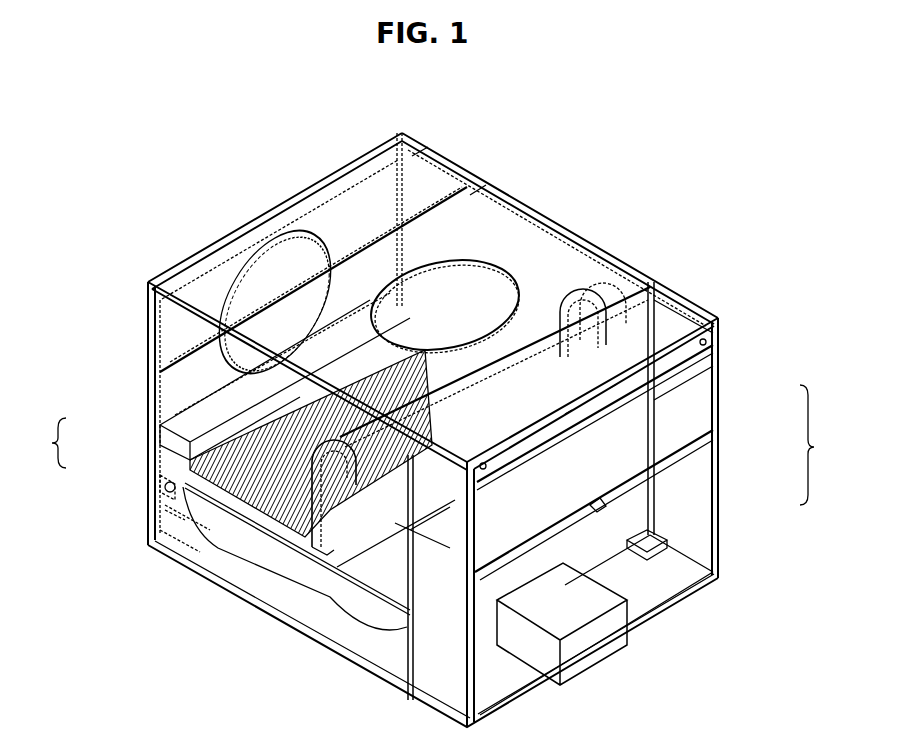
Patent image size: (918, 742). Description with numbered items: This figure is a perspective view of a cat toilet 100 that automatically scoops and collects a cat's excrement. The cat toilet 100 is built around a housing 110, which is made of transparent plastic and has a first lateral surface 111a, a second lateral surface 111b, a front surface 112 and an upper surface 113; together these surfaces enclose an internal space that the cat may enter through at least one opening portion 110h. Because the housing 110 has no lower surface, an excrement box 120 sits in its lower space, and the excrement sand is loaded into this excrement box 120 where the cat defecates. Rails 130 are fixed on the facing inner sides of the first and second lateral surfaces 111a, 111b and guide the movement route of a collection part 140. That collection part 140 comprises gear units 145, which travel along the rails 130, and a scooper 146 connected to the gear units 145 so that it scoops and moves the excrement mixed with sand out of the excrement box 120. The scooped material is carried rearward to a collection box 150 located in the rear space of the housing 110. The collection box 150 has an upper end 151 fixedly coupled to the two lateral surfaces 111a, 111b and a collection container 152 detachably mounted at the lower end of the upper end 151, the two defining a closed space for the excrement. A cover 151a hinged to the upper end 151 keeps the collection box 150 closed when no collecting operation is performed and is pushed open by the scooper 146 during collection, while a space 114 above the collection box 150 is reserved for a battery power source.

The cat toilet 100 is at (96, 110).
The housing 110 is at (480, 222).
The opening portion 110h is at (292, 268).
The first lateral surface 111a is at (448, 160).
The second lateral surface 111b is at (152, 283).
The front surface 112 is at (245, 228).
The upper surface 113 is at (578, 270).
The space 114 is at (682, 316).
The excrement box 120 is at (325, 593).
The rails 130 is at (260, 528).
The collection part 140 is at (43, 443).
The gear units 145 is at (146, 460).
The scooper 146 is at (158, 440).
The collection box 150 is at (828, 445).
The upper end 151 is at (630, 430).
The cover 151a is at (708, 342).
The collection container 152 is at (665, 527).